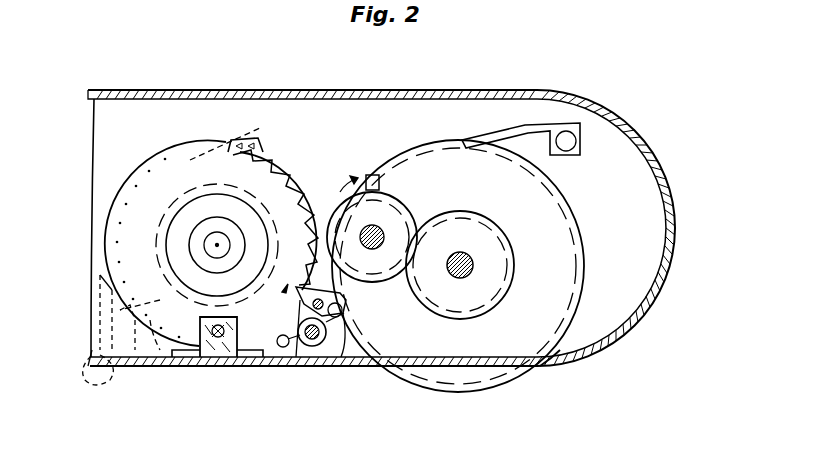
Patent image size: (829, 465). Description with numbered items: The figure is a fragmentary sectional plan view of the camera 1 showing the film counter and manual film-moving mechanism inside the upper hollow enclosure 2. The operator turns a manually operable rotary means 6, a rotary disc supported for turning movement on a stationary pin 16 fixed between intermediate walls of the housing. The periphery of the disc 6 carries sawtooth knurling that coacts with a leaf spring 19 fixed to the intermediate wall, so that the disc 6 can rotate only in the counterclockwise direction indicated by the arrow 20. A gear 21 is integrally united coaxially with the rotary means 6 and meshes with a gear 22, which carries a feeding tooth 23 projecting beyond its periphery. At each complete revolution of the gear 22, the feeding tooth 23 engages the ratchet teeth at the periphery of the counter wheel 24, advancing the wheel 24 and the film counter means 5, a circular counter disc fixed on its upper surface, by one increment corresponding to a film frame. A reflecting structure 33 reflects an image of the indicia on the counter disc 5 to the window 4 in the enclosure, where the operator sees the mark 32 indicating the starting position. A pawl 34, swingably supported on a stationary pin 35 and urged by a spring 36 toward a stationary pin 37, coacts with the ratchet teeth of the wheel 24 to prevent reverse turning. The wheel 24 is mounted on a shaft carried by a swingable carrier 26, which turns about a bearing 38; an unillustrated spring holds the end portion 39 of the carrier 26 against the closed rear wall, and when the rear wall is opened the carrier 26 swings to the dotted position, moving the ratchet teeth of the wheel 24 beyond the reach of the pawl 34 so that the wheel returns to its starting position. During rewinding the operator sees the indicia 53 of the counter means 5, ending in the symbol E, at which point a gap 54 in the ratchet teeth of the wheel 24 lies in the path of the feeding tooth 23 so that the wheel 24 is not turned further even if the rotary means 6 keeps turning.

The camera 1 is at (184, 86).
The upper hollow enclosure 2 is at (106, 89).
The window 4 is at (220, 364).
The film counter means 5 is at (238, 142).
The manually operable rotary means 6 is at (518, 383).
The stationary pin 16 is at (466, 256).
The leaf spring 19 is at (518, 127).
The arrow 20 is at (485, 407).
The gear 21 is at (459, 211).
The gear 22 is at (417, 232).
The feeding tooth 23 is at (373, 175).
The counter wheel 24 is at (314, 180).
The swingable carrier 26 is at (102, 279).
The mark 32 is at (210, 335).
The reflecting structure 33 is at (245, 362).
The pawl 34 is at (345, 340).
The pin 35 is at (314, 347).
The spring 36 is at (285, 348).
The stationary pin 37 is at (345, 300).
The bearing 38 is at (160, 352).
The end portion 39 is at (110, 382).
The indicia 53 is at (209, 145).
The gap 54 is at (281, 173).